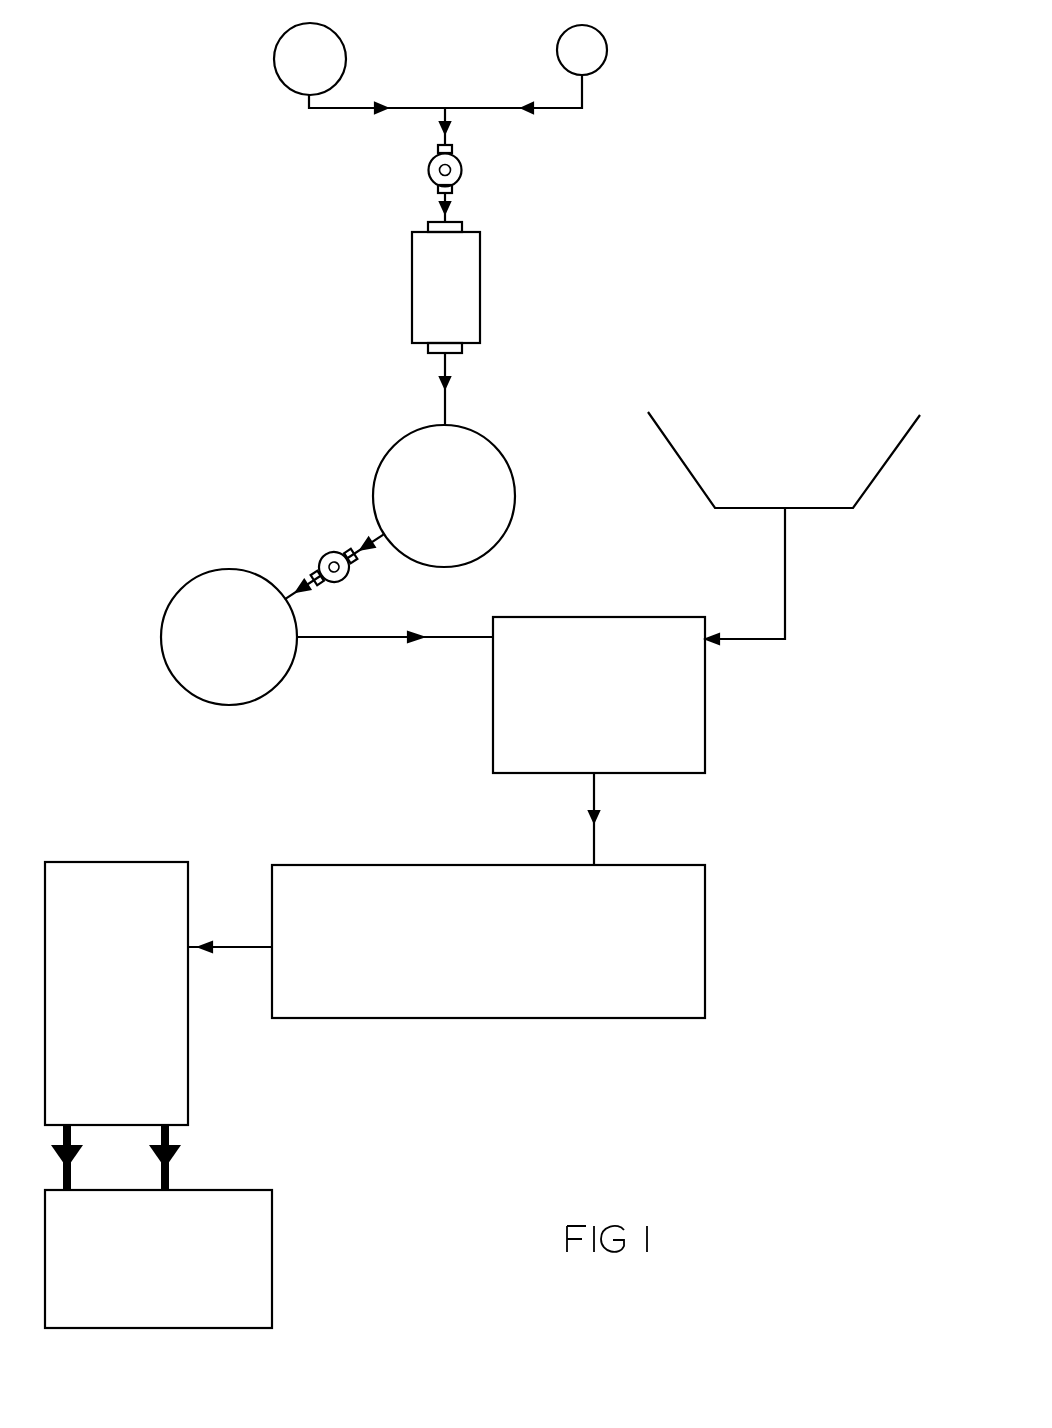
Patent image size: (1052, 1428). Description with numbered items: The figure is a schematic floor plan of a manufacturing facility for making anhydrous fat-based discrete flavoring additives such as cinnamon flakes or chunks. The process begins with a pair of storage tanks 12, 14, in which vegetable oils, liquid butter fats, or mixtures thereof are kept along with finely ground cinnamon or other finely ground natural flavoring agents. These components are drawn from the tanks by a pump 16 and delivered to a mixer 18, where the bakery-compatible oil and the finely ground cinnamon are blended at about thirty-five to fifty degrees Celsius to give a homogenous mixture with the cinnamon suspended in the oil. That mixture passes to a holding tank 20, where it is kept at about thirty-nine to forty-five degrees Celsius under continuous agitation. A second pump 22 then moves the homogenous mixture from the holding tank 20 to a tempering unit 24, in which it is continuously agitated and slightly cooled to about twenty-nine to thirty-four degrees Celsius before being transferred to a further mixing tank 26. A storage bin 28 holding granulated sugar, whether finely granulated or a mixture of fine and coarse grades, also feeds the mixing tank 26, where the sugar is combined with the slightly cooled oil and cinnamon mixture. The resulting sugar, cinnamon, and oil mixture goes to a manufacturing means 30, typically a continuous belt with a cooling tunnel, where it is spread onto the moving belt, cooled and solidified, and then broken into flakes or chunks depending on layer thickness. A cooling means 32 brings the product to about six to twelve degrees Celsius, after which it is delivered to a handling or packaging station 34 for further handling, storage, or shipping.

The storage tank 12 is at (274, 58).
The storage tank 14 is at (607, 50).
The pump 16 is at (461, 172).
The mixer 18 is at (480, 305).
The holding tank 20 is at (512, 519).
The pump 22 is at (325, 556).
The tempering unit 24 is at (160, 640).
The mixing tank 26 is at (630, 617).
The storage bin 28 is at (697, 485).
The manufacturing means 30 is at (470, 865).
The cooling means 32 is at (143, 862).
The packaging station 34 is at (272, 1254).